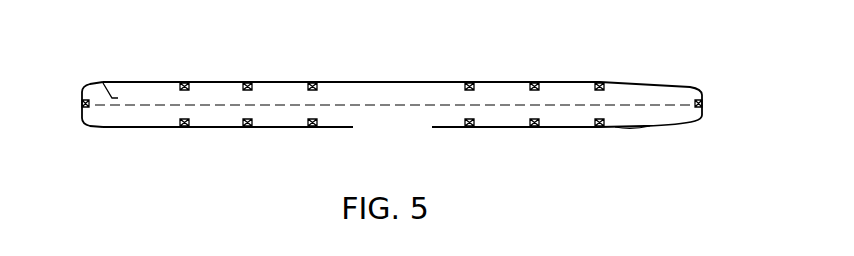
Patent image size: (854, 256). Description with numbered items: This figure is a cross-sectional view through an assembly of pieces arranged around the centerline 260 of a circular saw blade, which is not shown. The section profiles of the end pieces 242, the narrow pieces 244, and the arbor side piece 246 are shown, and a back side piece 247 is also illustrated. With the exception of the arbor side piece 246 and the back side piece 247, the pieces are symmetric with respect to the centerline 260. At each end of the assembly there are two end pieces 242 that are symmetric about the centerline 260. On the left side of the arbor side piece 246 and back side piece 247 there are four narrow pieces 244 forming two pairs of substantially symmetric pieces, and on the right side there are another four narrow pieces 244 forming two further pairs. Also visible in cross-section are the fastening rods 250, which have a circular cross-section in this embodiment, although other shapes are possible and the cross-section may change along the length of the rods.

The end pieces 242 is at (129, 78).
The narrow pieces 244 is at (225, 81).
The arbor side piece 246 is at (335, 129).
The back side piece 247 is at (372, 81).
The fastening rods 250 is at (187, 81).
The centerline 260 is at (103, 83).